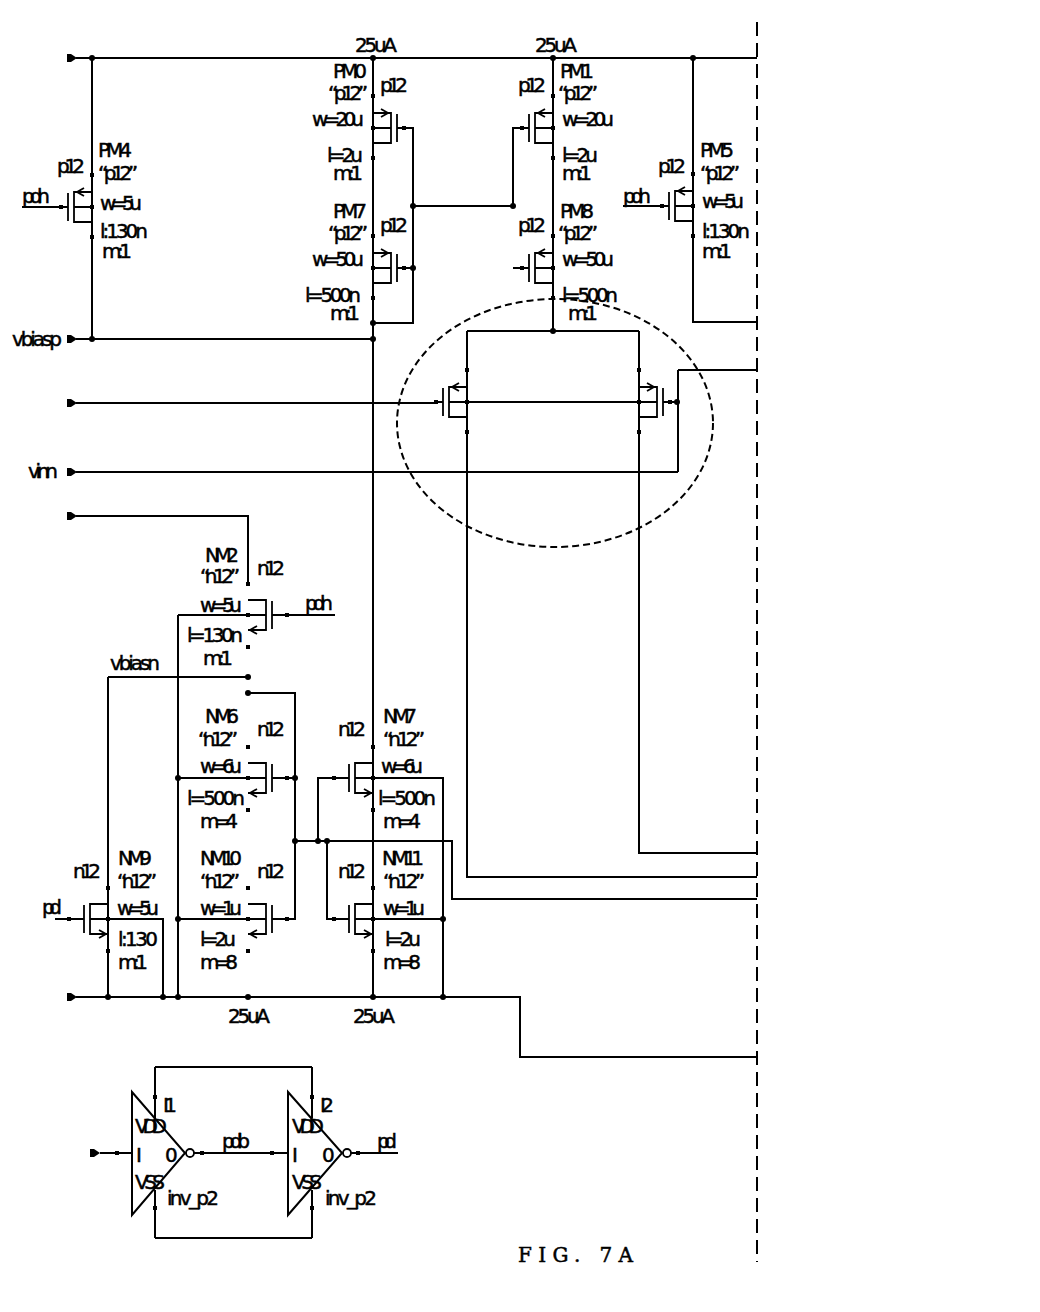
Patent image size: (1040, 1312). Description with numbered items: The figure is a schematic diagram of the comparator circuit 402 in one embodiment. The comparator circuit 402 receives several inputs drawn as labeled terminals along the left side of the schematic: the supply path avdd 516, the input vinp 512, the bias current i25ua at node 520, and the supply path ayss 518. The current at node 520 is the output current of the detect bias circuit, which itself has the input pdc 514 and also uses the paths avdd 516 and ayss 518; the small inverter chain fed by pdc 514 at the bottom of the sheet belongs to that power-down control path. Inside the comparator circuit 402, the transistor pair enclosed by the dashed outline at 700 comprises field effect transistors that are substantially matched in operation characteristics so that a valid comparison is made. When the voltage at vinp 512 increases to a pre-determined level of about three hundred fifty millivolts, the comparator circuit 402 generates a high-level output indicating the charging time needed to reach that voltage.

The comparator circuit 402 is at (683, 38).
The avdd 516 is at (257, 1054).
The ayss 518 is at (277, 1258).
The vinp 512 is at (233, 416).
The i25ua node 520 is at (132, 544).
The pdc input 514 is at (94, 1165).
The field effect transistors 700 is at (677, 505).